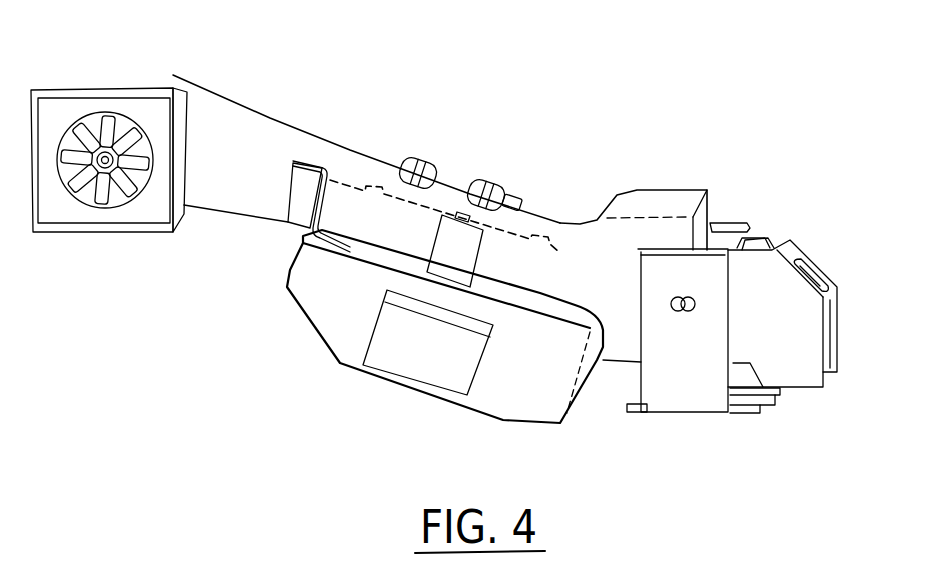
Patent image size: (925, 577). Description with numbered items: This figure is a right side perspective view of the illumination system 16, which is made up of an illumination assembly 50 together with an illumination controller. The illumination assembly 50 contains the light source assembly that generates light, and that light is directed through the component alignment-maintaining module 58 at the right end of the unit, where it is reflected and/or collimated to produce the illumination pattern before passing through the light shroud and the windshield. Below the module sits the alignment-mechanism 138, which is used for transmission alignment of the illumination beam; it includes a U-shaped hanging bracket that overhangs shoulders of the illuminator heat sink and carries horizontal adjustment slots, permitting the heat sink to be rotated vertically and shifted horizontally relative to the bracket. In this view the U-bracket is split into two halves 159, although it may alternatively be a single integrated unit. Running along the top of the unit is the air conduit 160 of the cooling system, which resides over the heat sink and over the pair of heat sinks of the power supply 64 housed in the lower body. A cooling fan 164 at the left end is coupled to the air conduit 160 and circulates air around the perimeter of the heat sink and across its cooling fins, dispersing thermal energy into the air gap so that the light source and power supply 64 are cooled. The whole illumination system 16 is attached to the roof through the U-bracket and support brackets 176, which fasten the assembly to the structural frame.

The illumination system 16 is at (694, 81).
The illumination assembly 50 is at (273, 118).
The component alignment-maintaining module 58 is at (792, 243).
The power supply 64 is at (510, 420).
The alignment-mechanism 138 is at (647, 413).
The halves 159 is at (747, 413).
The air conduit 160 is at (617, 196).
The cooling fan 164 is at (92, 231).
The support brackets 176 is at (347, 150).